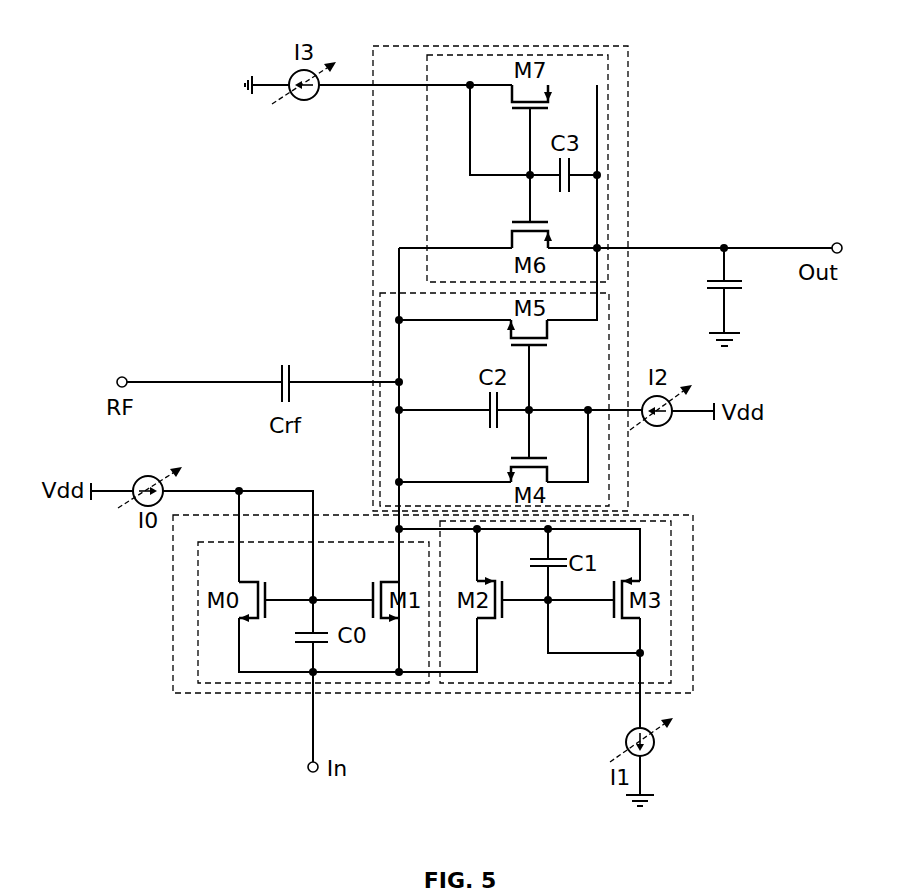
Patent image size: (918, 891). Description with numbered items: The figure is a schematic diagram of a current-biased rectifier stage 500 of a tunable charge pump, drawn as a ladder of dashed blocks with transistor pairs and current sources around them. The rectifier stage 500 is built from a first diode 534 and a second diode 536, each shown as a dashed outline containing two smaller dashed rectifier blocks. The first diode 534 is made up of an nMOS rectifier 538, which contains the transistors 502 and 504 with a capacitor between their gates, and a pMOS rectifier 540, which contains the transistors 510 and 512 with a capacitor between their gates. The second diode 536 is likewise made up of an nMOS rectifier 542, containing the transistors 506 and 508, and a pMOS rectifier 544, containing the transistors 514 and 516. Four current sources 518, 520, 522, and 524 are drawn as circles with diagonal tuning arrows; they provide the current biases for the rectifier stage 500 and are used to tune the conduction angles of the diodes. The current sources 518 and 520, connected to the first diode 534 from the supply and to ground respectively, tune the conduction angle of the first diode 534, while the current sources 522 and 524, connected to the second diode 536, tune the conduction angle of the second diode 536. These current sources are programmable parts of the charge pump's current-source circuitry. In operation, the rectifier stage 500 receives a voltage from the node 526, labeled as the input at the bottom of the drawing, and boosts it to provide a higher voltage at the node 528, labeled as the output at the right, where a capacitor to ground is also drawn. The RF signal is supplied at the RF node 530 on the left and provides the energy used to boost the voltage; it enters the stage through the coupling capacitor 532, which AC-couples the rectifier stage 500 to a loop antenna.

The current-biased rectifier stage 500 is at (155, 55).
The transistor 502 is at (267, 590).
The transistor 504 is at (372, 590).
The transistor 506 is at (508, 462).
The transistor 508 is at (512, 345).
The transistor 510 is at (497, 618).
The transistor 512 is at (612, 608).
The transistor 514 is at (517, 222).
The transistor 516 is at (547, 92).
The current source 518 is at (145, 477).
The current source 520 is at (654, 745).
The current source 522 is at (660, 426).
The current source 524 is at (304, 101).
The node 526 is at (308, 772).
The node 528 is at (832, 246).
The RF node 530 is at (120, 378).
The capacitor 532 is at (283, 365).
The first diode 534 is at (693, 555).
The second diode 536 is at (420, 46).
The nMOS rectifier 538 is at (198, 650).
The pMOS rectifier 540 is at (671, 645).
The nMOS rectifier 542 is at (620, 323).
The pMOS rectifier 544 is at (608, 175).